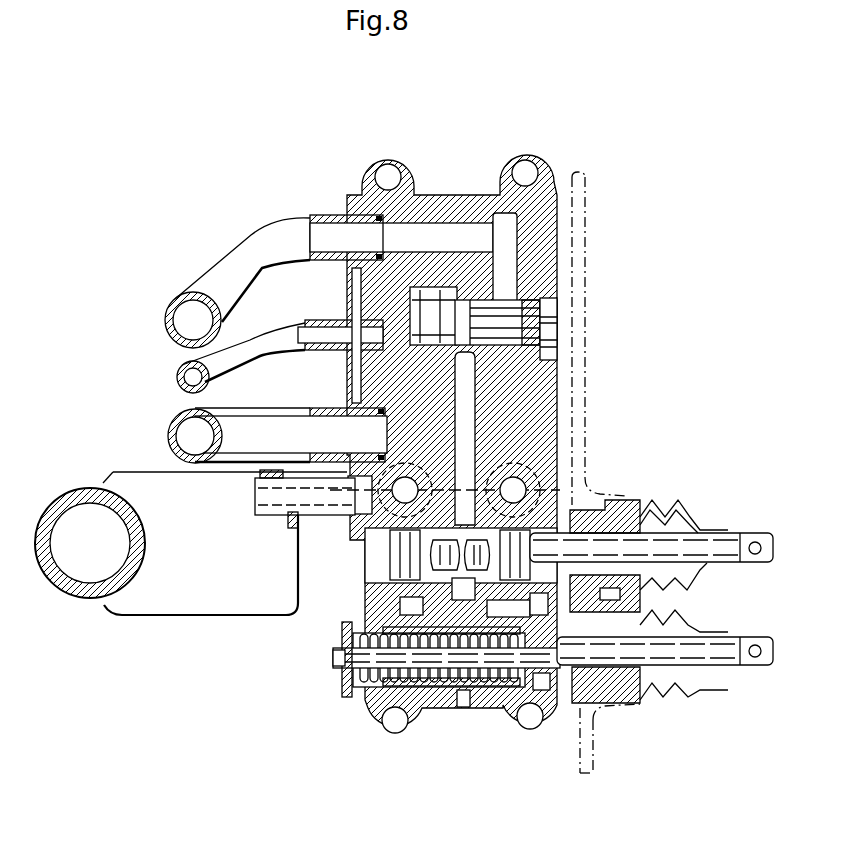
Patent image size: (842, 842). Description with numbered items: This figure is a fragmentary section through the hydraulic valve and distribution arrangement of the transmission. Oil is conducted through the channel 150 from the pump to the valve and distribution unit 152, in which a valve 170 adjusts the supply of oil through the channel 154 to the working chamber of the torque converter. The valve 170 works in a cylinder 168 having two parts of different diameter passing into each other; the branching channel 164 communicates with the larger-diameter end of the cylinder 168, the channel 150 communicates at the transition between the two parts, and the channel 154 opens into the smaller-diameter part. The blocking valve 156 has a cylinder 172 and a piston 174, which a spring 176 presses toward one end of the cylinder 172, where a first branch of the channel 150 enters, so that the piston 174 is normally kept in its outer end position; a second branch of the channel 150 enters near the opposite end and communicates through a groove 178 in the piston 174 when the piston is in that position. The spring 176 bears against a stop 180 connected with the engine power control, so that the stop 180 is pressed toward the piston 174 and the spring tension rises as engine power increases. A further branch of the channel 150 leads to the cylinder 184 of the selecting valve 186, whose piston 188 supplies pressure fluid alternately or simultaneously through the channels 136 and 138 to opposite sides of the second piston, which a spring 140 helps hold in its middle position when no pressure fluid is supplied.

The channel 136 is at (436, 470).
The channel 138 is at (522, 482).
The spring 140 is at (205, 607).
The channel 150 is at (253, 412).
The valve and distribution unit 152 is at (550, 308).
The channel 154 is at (255, 233).
The blocking valve 156 is at (366, 720).
The branching channel 164 is at (267, 340).
The cylinder 168 is at (473, 357).
The valve 170 is at (548, 352).
The cylinder 172 is at (533, 737).
The piston 174 is at (465, 712).
The spring 176 is at (365, 700).
The groove 178 is at (421, 712).
The stop 180 is at (342, 690).
The cylinder 184 is at (433, 578).
The selecting valve 186 is at (372, 563).
The piston 188 is at (393, 543).